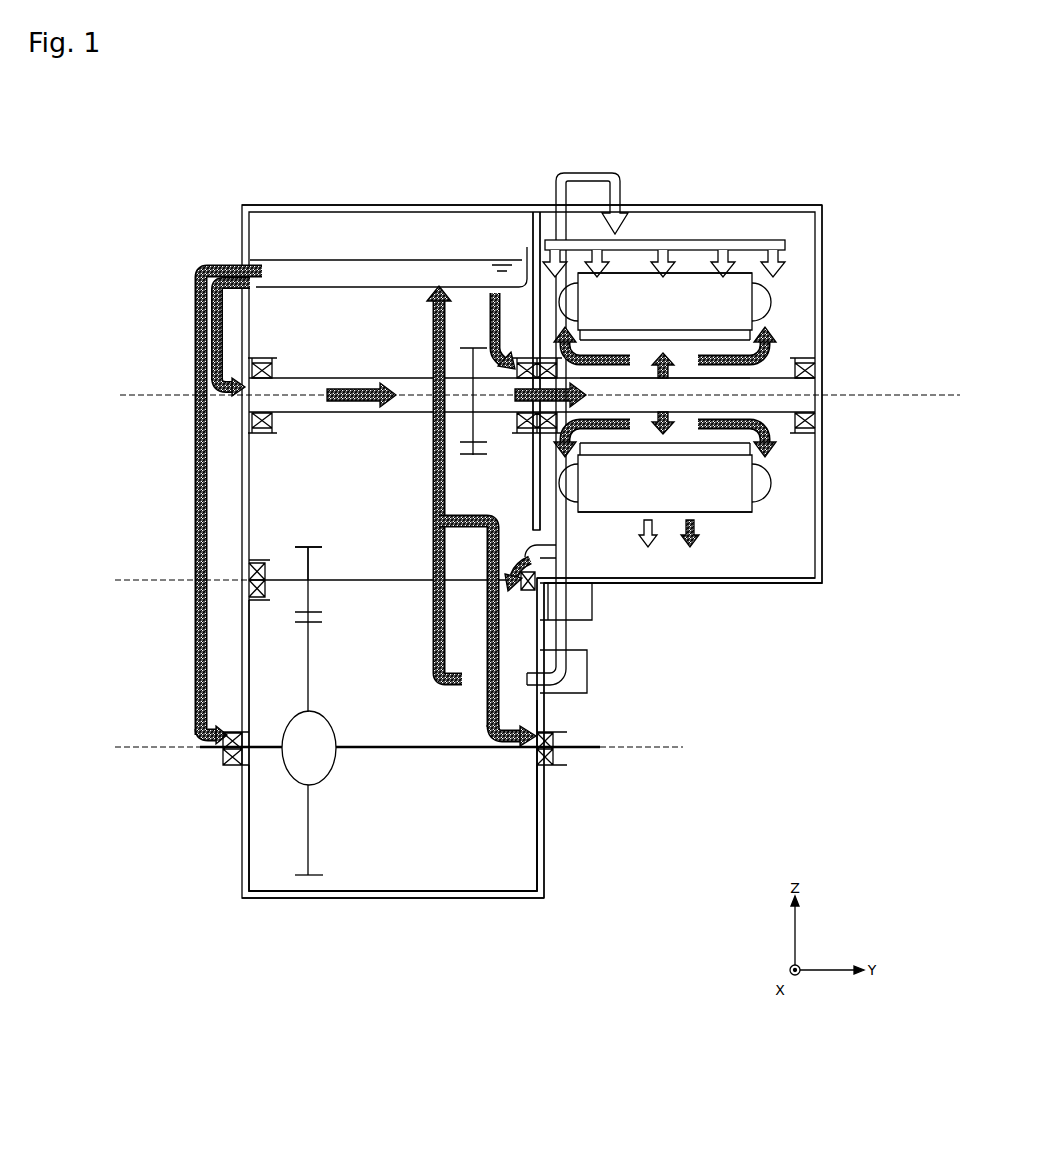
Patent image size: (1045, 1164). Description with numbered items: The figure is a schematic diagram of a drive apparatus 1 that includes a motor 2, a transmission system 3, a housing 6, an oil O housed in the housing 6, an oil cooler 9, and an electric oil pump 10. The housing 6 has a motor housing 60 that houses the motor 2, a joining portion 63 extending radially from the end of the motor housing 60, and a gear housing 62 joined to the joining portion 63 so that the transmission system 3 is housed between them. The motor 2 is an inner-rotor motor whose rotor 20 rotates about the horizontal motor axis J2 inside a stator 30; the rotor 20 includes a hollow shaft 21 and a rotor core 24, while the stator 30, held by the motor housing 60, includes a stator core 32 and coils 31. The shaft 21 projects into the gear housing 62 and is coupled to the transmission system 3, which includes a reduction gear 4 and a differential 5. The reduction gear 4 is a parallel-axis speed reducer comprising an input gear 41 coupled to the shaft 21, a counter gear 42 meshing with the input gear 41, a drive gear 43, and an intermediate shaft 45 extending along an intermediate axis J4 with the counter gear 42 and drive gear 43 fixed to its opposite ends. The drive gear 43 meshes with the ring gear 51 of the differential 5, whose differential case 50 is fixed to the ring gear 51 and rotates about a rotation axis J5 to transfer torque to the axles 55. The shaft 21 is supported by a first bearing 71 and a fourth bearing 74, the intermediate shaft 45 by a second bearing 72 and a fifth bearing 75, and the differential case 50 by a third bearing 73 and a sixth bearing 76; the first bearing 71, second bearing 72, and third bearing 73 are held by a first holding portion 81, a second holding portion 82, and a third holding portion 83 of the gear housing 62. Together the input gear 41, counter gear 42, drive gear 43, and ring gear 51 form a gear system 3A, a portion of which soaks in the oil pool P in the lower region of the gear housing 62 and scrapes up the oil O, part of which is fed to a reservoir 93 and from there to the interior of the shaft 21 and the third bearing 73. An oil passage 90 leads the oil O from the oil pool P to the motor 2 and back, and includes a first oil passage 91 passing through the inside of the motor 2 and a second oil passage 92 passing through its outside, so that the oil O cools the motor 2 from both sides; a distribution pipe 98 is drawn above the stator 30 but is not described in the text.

The drive apparatus 1 is at (706, 118).
The motor 2 is at (796, 280).
The transmission system 3 is at (300, 238).
The gear system 3A is at (347, 808).
The reduction gear 4 is at (333, 525).
The differential 5 is at (288, 792).
The housing 6 is at (820, 196).
The oil cooler 9 is at (594, 604).
The electric oil pump 10 is at (588, 676).
The rotor 20 is at (776, 358).
The shaft 21 is at (687, 372).
The rotor core 24 is at (812, 408).
The stator 30 is at (788, 305).
The coils 31 is at (758, 492).
The stator core 32 is at (741, 282).
The input gear 41 is at (461, 345).
The counter gear 42 is at (468, 452).
The drive gear 43 is at (304, 545).
The intermediate shaft 45 is at (362, 586).
The differential case 50 is at (338, 760).
The ring gear 51 is at (303, 878).
The axles 55 is at (604, 745).
The motor housing 60 is at (791, 590).
The gear housing 62 is at (258, 904).
The joining portion 63 is at (550, 871).
The first bearing 71 is at (247, 414).
The second bearing 72 is at (248, 586).
The third bearing 73 is at (224, 745).
The fourth bearing 74 is at (530, 432).
The fifth bearing 75 is at (527, 597).
The sixth bearing 76 is at (558, 775).
The first holding portion 81 is at (264, 436).
The second holding portion 82 is at (258, 600).
The third holding portion 83 is at (230, 768).
The oil passage 90 is at (467, 763).
The first oil passage 91 is at (405, 612).
The second oil passage 92 is at (513, 692).
The reservoir 93 is at (290, 298).
The oil distribution pipe 98 is at (697, 250).
The motor axis J2 is at (860, 396).
The intermediate axis J4 is at (128, 580).
The rotation axis J5 is at (652, 750).
The oil pool P is at (390, 684).
The oil O is at (530, 703).